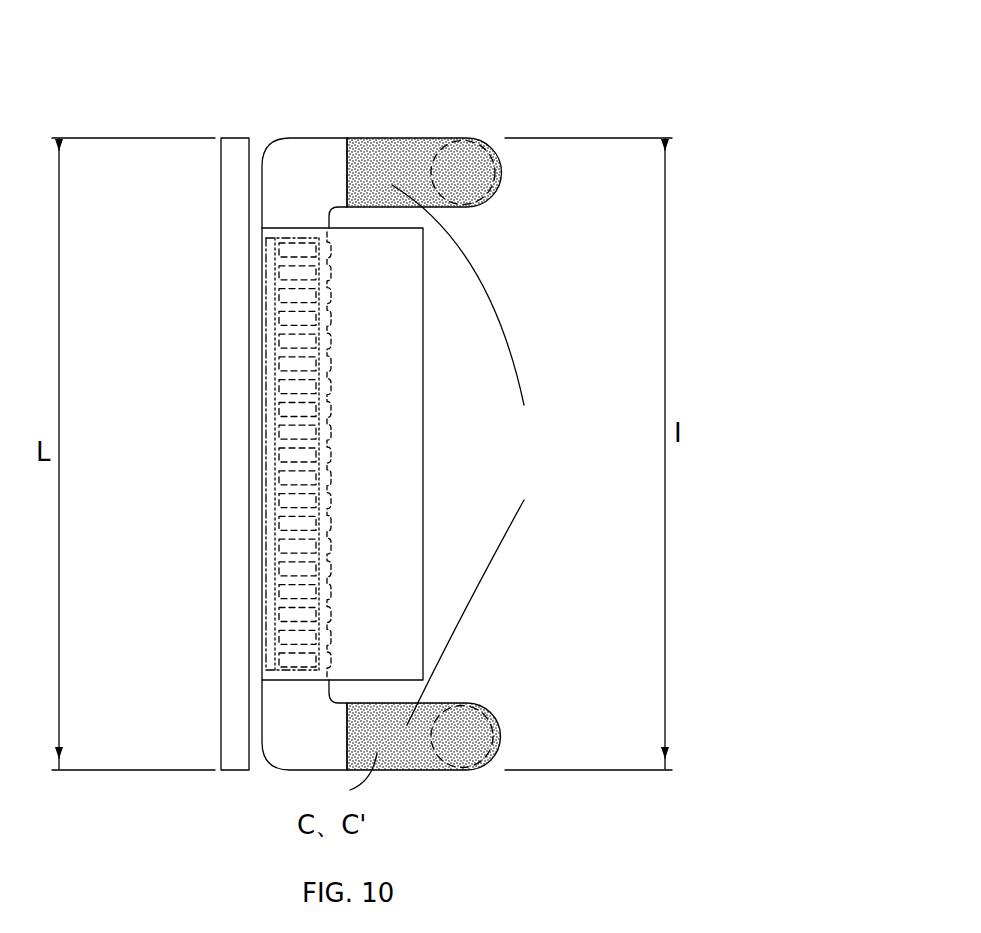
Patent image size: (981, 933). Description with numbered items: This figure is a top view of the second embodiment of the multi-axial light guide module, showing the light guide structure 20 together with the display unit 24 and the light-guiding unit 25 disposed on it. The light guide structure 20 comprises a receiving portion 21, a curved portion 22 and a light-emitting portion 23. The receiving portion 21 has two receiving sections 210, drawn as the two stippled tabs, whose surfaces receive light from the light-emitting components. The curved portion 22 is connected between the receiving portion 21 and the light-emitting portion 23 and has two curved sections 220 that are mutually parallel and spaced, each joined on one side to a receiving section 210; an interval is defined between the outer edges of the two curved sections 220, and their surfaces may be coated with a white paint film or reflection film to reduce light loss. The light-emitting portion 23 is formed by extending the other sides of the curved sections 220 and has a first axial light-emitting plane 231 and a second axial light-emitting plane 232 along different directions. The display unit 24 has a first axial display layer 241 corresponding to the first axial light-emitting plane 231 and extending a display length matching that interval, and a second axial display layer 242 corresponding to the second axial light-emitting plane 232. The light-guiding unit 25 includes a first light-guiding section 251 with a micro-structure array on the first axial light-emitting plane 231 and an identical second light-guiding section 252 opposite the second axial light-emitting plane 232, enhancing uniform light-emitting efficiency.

The light guide structure 20 is at (359, 136).
The receiving portion 21 is at (438, 138).
The receiving section 210 is at (482, 175).
The curved portion 22 is at (583, 397).
The curved section 220 is at (487, 455).
The light-emitting portion 23 is at (140, 170).
The first axial light-emitting plane 231 is at (281, 221).
The second axial light-emitting plane 232 is at (271, 252).
The display unit 24 is at (315, 62).
The first axial display layer 241 is at (372, 245).
The second axial display layer 242 is at (233, 152).
The light-guiding unit 25 is at (312, 473).
The first light-guiding section 251 is at (280, 568).
The second light-guiding section 252 is at (333, 457).